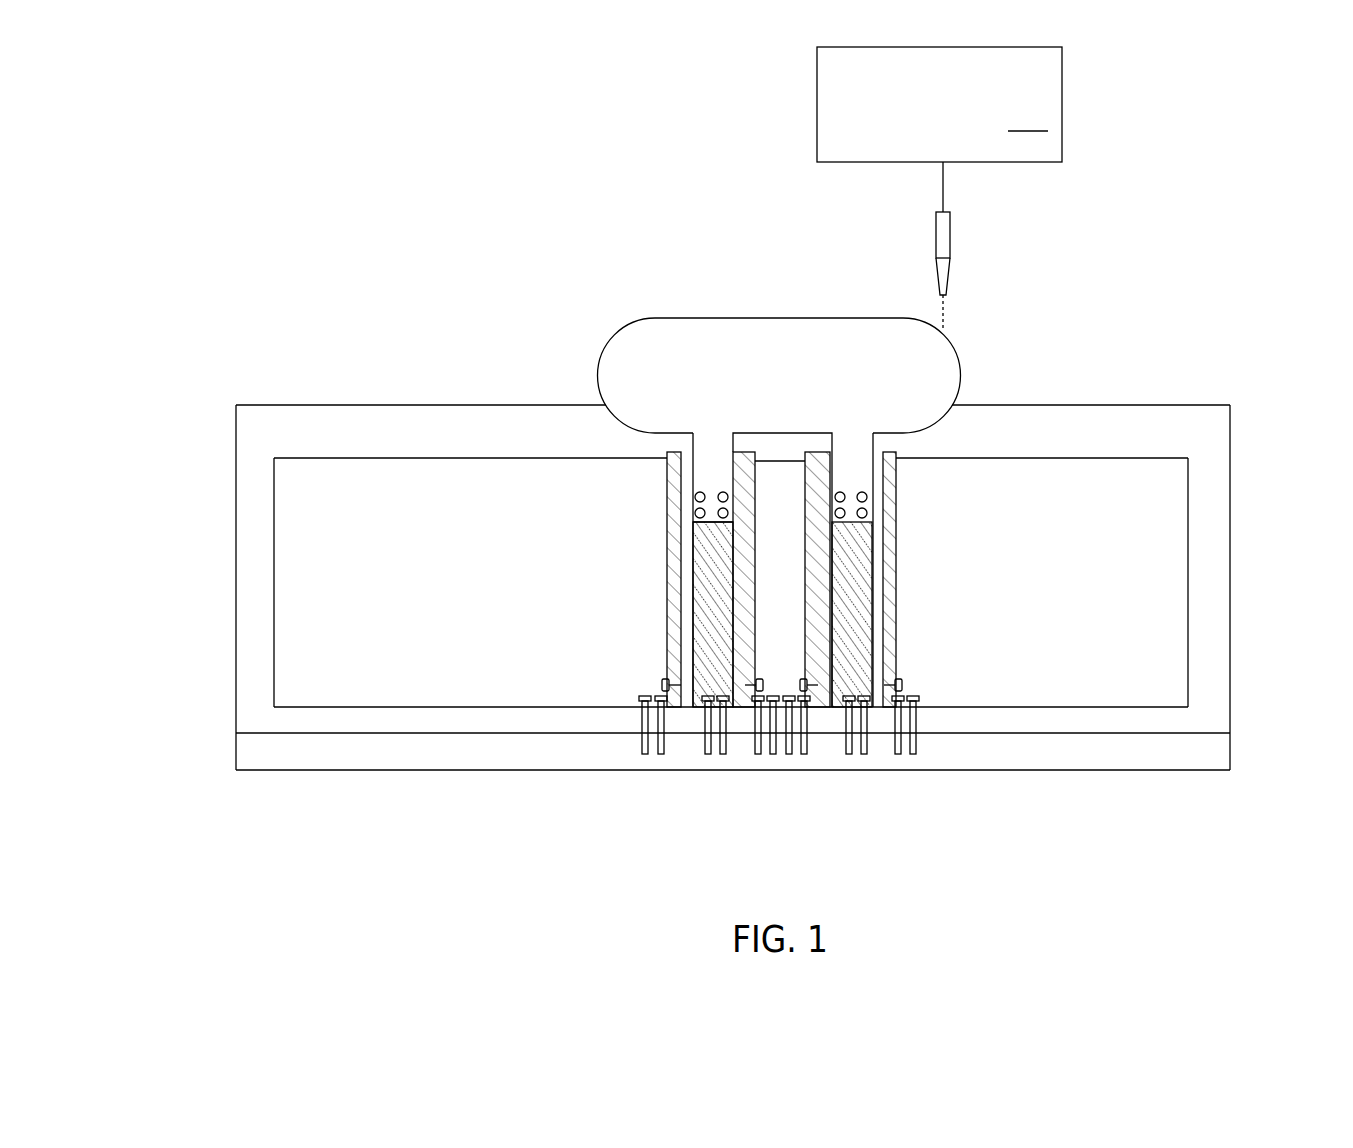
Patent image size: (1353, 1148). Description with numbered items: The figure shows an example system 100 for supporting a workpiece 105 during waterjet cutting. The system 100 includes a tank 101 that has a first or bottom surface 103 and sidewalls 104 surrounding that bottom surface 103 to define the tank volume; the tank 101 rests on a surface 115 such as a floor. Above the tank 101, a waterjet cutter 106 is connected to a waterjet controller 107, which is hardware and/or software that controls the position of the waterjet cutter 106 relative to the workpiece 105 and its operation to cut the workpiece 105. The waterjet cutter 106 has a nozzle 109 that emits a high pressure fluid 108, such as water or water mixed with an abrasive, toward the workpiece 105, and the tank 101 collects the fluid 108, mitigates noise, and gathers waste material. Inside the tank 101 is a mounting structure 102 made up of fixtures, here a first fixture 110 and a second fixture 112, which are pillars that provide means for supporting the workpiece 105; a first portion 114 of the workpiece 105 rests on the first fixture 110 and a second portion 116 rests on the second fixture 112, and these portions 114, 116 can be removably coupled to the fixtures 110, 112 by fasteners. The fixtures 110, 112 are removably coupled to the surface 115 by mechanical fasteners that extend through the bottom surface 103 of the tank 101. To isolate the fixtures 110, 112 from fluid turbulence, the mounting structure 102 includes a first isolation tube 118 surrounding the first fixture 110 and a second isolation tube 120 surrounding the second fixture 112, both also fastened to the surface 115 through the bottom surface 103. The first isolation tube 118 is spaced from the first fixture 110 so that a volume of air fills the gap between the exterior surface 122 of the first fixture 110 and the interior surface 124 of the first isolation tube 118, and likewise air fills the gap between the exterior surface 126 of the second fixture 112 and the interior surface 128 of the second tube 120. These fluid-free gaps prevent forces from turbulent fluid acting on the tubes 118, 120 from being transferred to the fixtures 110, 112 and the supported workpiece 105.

The system 100 is at (217, 198).
The tank 101 is at (217, 478).
The mounting structure 102 is at (648, 647).
The first surface 103 is at (405, 715).
The sidewalls 104 is at (256, 622).
The workpiece 105 is at (630, 302).
The waterjet cutter 106 is at (930, 235).
The waterjet controller 107 is at (939, 129).
The fluid 108 is at (950, 305).
The nozzle 109 is at (938, 288).
The first fixture 110 is at (702, 610).
The second fixture 112 is at (842, 572).
The first portion 114 is at (705, 433).
The surface 115 is at (236, 752).
The second portion 116 is at (837, 433).
The first isolation tube 118 is at (665, 497).
The second isolation tube 120 is at (903, 668).
The exterior surface 122 is at (707, 547).
The interior surface 124 is at (692, 583).
The exterior surface 126 is at (873, 553).
The interior surface 128 is at (892, 643).